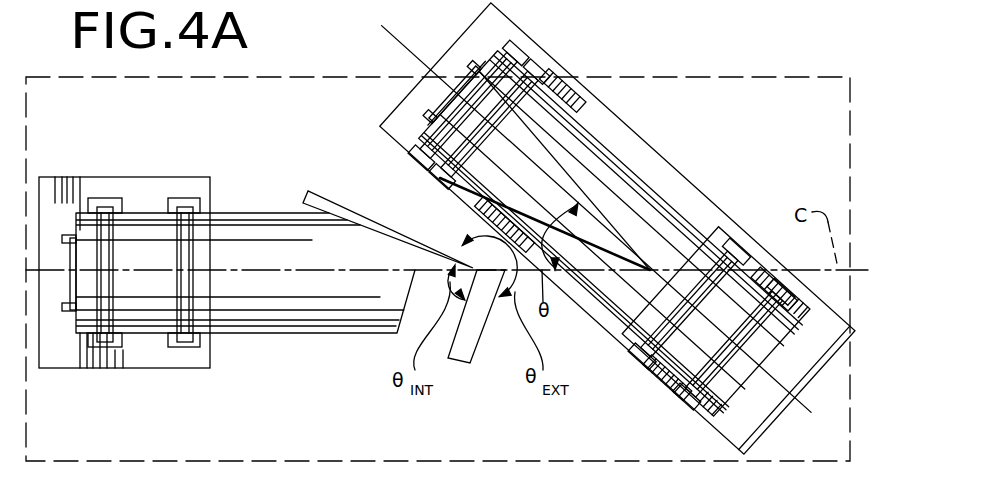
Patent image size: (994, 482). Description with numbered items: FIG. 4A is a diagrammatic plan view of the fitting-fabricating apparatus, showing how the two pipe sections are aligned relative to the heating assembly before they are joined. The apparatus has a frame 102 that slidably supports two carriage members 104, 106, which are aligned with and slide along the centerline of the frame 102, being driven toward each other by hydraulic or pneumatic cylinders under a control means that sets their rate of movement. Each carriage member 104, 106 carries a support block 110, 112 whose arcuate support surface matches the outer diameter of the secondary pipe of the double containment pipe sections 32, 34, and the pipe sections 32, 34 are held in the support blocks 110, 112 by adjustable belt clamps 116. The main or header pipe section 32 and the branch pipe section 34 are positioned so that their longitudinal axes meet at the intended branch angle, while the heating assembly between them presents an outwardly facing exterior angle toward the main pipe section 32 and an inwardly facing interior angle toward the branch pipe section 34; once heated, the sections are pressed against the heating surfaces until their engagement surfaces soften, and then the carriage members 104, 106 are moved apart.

The main pipe section 32 is at (566, 170).
The branch pipe section 34 is at (238, 264).
The frame 102 is at (798, 128).
The carriage member 104 is at (632, 343).
The carriage member 106 is at (137, 352).
The support block 110 is at (540, 73).
The support block 112 is at (175, 200).
The adjustable belt clamp 116 is at (490, 100).